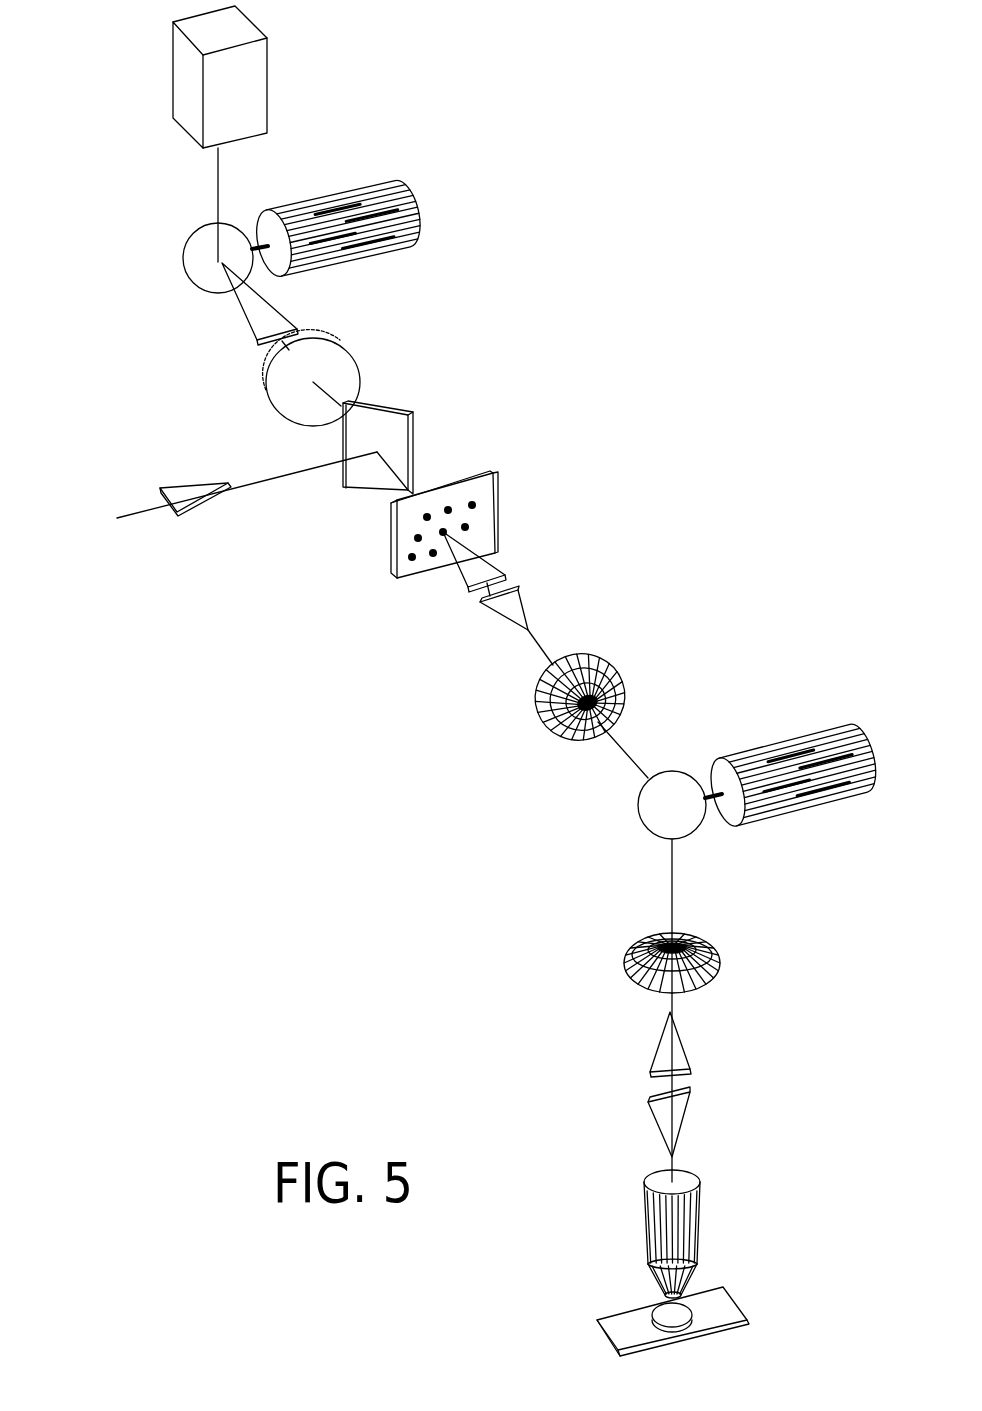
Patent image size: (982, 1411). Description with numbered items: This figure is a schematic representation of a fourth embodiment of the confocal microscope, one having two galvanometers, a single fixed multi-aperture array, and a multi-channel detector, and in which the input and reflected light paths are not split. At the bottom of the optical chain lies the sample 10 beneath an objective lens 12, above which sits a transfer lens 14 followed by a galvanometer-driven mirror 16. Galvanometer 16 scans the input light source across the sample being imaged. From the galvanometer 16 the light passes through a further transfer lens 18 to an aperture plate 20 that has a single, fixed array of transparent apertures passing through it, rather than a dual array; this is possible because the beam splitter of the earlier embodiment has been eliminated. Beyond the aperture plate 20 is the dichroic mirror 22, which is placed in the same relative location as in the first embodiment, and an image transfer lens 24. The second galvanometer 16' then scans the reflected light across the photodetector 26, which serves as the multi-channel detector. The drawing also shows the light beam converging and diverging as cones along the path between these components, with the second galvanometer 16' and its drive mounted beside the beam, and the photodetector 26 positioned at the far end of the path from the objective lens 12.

The specimen slide 10 is at (733, 1292).
The objective lens 12 is at (695, 1165).
The transfer lens 14 is at (718, 935).
The galvanometer-driven mirror 16 is at (706, 806).
The galvanometer 16' is at (250, 248).
The transfer lens 18 is at (613, 647).
The aperture plate 20 is at (502, 465).
The dichroic mirror 22 is at (418, 407).
The image transfer lens 24 is at (367, 347).
The photodetector 26 is at (168, 123).